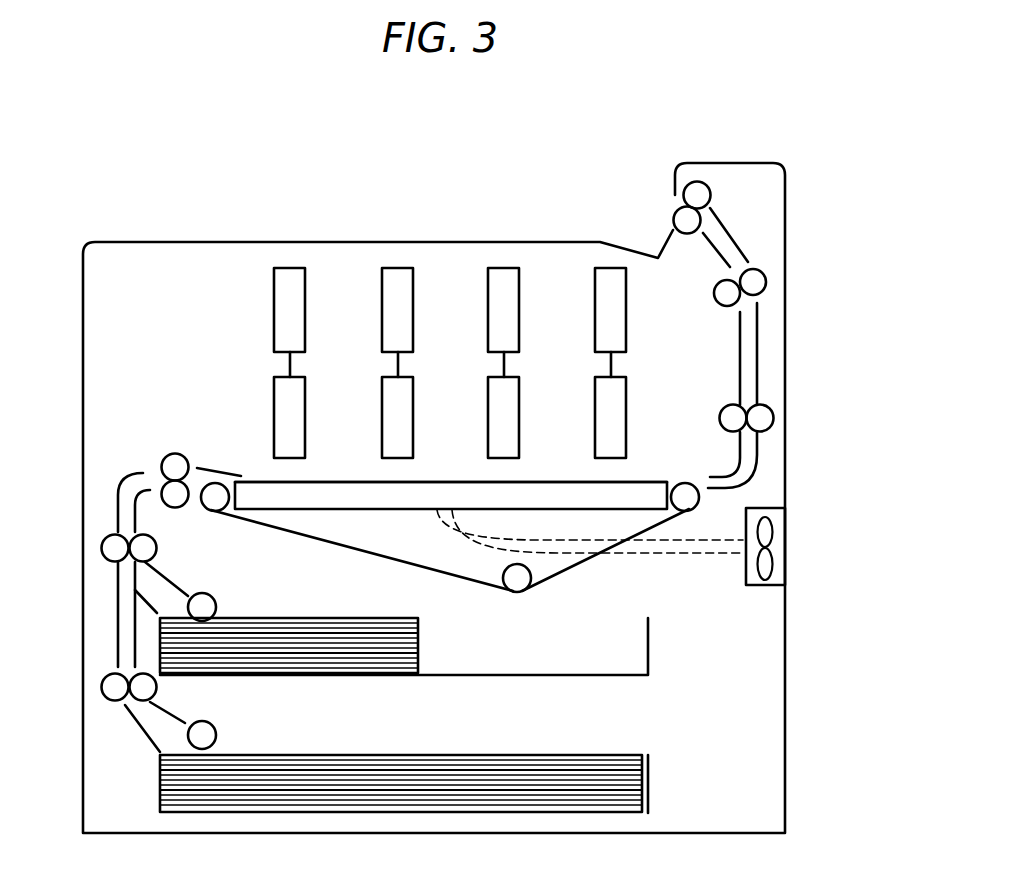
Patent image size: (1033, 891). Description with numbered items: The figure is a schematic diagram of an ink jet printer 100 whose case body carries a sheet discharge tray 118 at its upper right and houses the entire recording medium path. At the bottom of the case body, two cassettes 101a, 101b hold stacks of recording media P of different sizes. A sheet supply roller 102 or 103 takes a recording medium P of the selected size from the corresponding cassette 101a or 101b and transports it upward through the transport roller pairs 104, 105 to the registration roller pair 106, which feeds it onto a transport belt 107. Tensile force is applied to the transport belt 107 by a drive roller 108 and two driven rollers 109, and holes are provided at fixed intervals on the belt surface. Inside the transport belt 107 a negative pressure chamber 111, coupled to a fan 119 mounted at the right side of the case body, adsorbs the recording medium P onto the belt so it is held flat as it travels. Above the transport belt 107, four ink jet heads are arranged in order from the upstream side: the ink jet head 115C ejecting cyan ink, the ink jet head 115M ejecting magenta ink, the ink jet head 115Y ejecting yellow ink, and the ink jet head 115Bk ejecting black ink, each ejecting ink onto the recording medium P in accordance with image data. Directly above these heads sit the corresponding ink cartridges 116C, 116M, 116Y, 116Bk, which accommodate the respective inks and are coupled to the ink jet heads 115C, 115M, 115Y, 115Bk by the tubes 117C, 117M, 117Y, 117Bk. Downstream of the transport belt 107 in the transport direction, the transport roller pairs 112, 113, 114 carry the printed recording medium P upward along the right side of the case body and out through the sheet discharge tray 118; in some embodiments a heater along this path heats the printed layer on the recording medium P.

The ink jet printer 100 is at (799, 124).
The cassette 101a is at (650, 787).
The cassette 101b is at (650, 645).
The sheet supply roller 102 is at (216, 605).
The sheet supply roller 103 is at (216, 734).
The transport roller pair 104 is at (101, 548).
The transport roller pair 105 is at (101, 690).
The registration roller pair 106 is at (160, 463).
The transport belt 107 is at (368, 555).
The drive roller 108 is at (687, 502).
The driven roller 109 is at (210, 502).
The negative pressure chamber 111 is at (412, 511).
The transport roller pair 112 is at (774, 415).
The transport roller pair 113 is at (766, 278).
The transport roller pair 114 is at (712, 193).
The ink jet head 115C is at (274, 420).
The ink jet head 115M is at (382, 420).
The ink jet head 115Y is at (488, 420).
The ink jet head 115Bk is at (627, 440).
The ink cartridge 116C is at (290, 268).
The ink cartridge 116M is at (398, 268).
The ink cartridge 116Y is at (505, 268).
The ink cartridge 116Bk is at (611, 268).
The tube 117C is at (290, 365).
The tube 117M is at (398, 365).
The tube 117Y is at (504, 365).
The tube 117Bk is at (611, 365).
The sheet discharge tray 118 is at (652, 247).
The fan 119 is at (775, 548).
The recording medium P is at (373, 673).